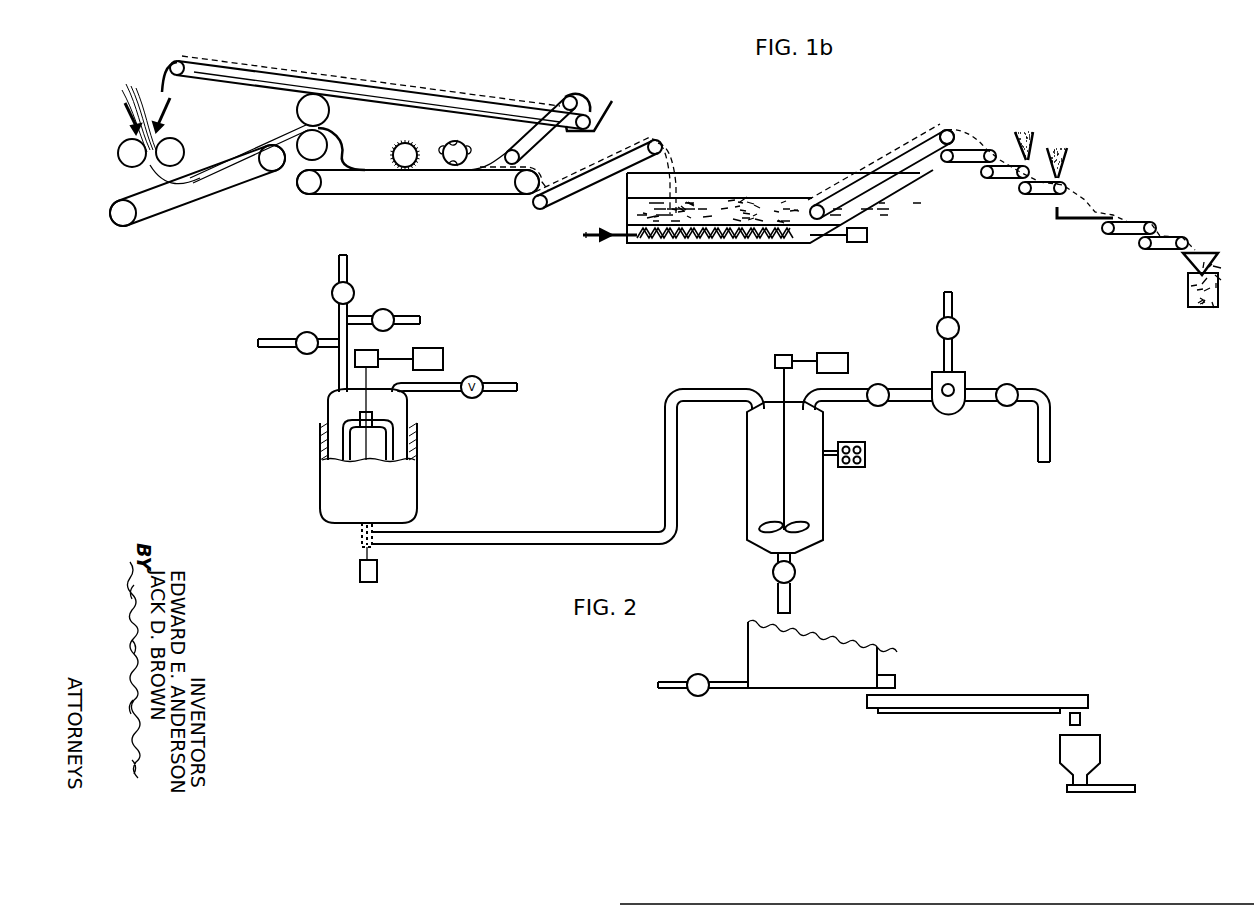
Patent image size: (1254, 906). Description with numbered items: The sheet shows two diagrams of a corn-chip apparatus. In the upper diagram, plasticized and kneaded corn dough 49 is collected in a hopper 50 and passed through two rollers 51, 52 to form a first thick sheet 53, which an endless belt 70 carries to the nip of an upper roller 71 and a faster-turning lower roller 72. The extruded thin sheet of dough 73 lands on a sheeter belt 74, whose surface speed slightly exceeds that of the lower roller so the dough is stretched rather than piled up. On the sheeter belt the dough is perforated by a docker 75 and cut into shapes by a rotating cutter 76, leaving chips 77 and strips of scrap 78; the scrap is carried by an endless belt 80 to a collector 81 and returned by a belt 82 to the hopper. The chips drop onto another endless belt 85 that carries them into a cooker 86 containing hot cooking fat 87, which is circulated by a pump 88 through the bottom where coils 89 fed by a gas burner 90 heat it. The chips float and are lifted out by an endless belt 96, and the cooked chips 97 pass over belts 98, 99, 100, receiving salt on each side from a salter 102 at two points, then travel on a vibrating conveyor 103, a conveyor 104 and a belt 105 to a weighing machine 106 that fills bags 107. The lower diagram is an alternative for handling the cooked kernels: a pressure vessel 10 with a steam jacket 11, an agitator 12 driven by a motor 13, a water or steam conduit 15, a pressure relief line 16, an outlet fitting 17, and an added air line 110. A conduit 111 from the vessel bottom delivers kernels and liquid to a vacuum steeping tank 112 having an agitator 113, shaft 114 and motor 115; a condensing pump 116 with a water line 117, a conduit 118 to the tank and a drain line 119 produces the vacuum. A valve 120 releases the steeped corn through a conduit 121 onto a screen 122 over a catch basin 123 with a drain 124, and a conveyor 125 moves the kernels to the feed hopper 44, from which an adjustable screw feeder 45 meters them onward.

In FIG. 1b, the corn dough 49 is at (133, 99).
In FIG. 1b, the hopper 50 is at (166, 116).
In FIG. 1b, the roller 51 is at (180, 148).
In FIG. 1b, the roller 52 is at (118, 153).
In FIG. 1b, the thick sheet 53 is at (270, 134).
In FIG. 1b, the endless belt 70 is at (178, 204).
In FIG. 1b, the upper roller 71 is at (297, 110).
In FIG. 1b, the lower roller 72 is at (320, 137).
In FIG. 1b, the thin sheet of dough 73 is at (338, 153).
In FIG. 1b, the sheeter belt 74 is at (336, 176).
In FIG. 1b, the docker 75 is at (405, 145).
In FIG. 1b, the rotating cutter 76 is at (455, 145).
In FIG. 1b, the chips 77 is at (542, 184).
In FIG. 1b, the strips of scrap 78 is at (160, 73).
In FIG. 1b, the endless belt 80 is at (527, 140).
In FIG. 1b, the collector 81 is at (606, 112).
In FIG. 1b, the belt 82 is at (242, 84).
In FIG. 1b, the endless belt 85 is at (549, 203).
In FIG. 1b, the cooker 86 is at (760, 173).
In FIG. 1b, the hot cooking fat 87 is at (746, 200).
In FIG. 1b, the pump 88 is at (867, 236).
In FIG. 1b, the coils 89 is at (718, 243).
In FIG. 1b, the gas burner 90 is at (598, 241).
In FIG. 1b, the endless belt 96 is at (906, 150).
In FIG. 1b, the cooked chips 97 is at (952, 142).
In FIG. 1b, the belt 98 is at (962, 163).
In FIG. 1b, the belt 99 is at (1000, 180).
In FIG. 1b, the endless belt 100 is at (1036, 196).
In FIG. 1b, the salter 102 is at (1024, 133).
In FIG. 1b, the vibrating conveyor 103 is at (1063, 222).
In FIG. 1b, the conveyor 104 is at (1106, 238).
In FIG. 1b, the belt 105 is at (1142, 252).
In FIG. 1b, the weighing machine 106 is at (1180, 270).
In FIG. 1b, the bags 107 is at (1188, 290).
In FIG. 2, the pressure vessel 10 is at (320, 486).
In FIG. 2, the steam jacket 11 is at (321, 440).
In FIG. 2, the agitator 12 is at (360, 420).
In FIG. 2, the motor 13 is at (445, 361).
In FIG. 2, the conduit 15 is at (279, 348).
In FIG. 2, the pressure relief line 16 is at (347, 267).
In FIG. 2, the outlet control 17 is at (360, 572).
In FIG. 2, the line 110 is at (406, 320).
In FIG. 2, the conduit 111 is at (543, 531).
In FIG. 2, the vacuum steeping tank 112 is at (746, 486).
In FIG. 2, the agitator 113 is at (790, 524).
In FIG. 2, the shaft 114 is at (782, 448).
In FIG. 2, the motor 115 is at (828, 354).
In FIG. 2, the condensing pump 116 is at (951, 407).
In FIG. 2, the water line 117 is at (953, 305).
In FIG. 2, the conduit 118 is at (886, 401).
In FIG. 2, the drain line 119 is at (1050, 430).
In FIG. 2, the valve 120 is at (772, 571).
In FIG. 2, the conduit 121 is at (776, 600).
In FIG. 2, the screen 122 is at (829, 632).
In FIG. 2, the catch basin 123 is at (826, 683).
In FIG. 2, the drain 124 is at (668, 682).
In FIG. 2, the conveyor 125 is at (986, 695).
In FIG. 2, the feed hopper 44 is at (1100, 751).
In FIG. 2, the adjustable screw feeder 45 is at (1110, 785).